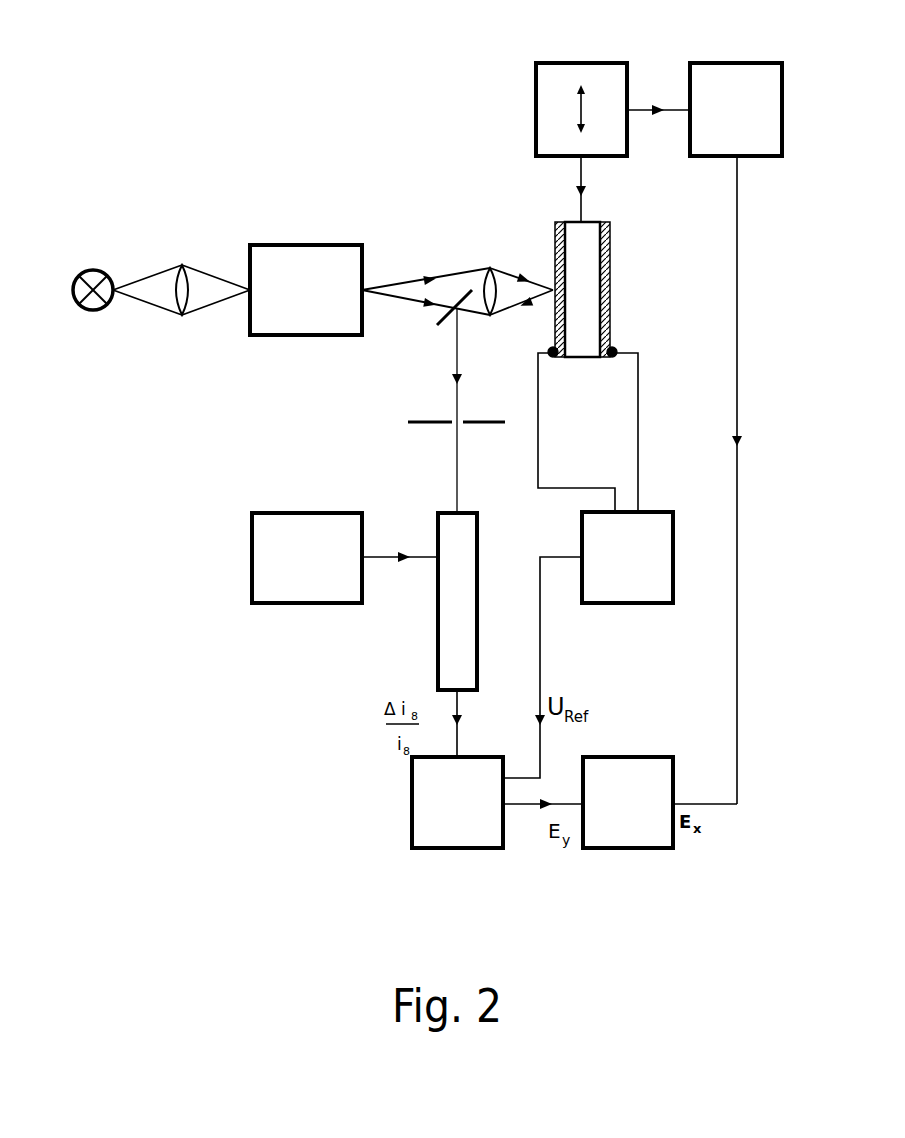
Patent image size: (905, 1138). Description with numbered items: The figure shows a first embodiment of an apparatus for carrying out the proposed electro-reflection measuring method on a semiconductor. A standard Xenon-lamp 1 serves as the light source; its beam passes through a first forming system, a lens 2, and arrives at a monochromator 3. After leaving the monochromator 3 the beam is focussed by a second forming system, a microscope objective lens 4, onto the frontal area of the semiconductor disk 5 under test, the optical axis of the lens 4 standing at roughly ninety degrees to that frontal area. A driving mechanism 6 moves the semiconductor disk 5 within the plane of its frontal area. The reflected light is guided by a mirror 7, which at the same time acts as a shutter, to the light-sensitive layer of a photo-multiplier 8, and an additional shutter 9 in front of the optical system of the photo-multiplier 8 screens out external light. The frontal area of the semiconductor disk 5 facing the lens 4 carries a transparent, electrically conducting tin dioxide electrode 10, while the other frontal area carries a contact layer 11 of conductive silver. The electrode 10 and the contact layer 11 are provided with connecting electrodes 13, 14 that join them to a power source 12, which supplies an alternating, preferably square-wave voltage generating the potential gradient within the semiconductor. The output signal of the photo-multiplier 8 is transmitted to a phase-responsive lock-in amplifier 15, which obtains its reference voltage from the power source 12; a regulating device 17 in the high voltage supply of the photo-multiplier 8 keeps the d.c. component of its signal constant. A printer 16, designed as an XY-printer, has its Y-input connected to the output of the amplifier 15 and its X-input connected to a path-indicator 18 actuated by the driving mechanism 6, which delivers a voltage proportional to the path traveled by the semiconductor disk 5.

The Xenon-lamp 1 is at (93, 268).
The lens 2 is at (182, 262).
The monochromator 3 is at (301, 245).
The microscope objective lens 4 is at (489, 266).
The semiconductor disk 5 is at (584, 243).
The driving mechanism 6 is at (579, 63).
The mirror 7 is at (437, 325).
The photo-multiplier 8 is at (437, 527).
The shutter 9 is at (420, 423).
The electrode 10 is at (555, 240).
The contact layer 11 is at (612, 280).
The power source 12 is at (674, 552).
The connecting electrode 13 is at (548, 351).
The connecting electrode 14 is at (617, 350).
The phase-responsive amplifier 15 is at (410, 806).
The printer 16 is at (630, 850).
The regulating device 17 is at (250, 559).
The path-indicator 18 is at (734, 63).